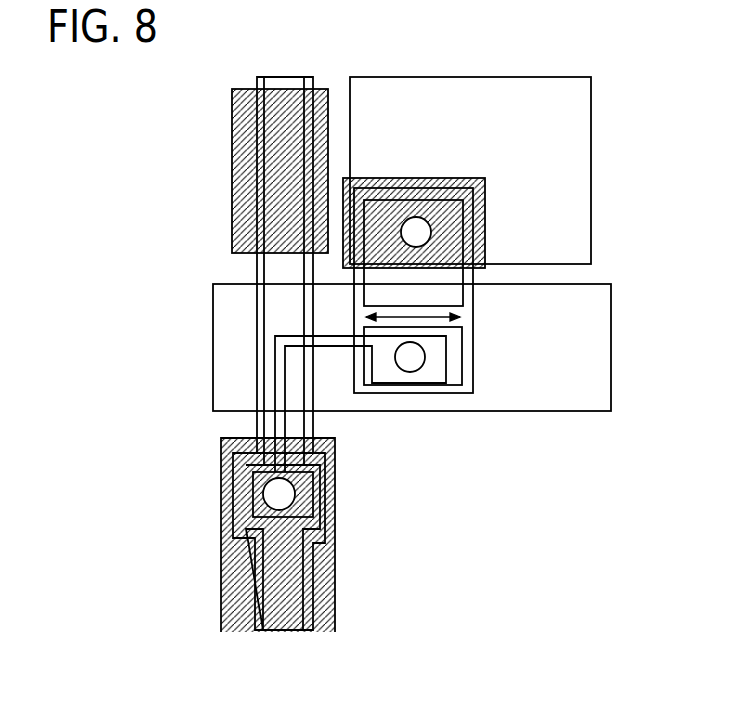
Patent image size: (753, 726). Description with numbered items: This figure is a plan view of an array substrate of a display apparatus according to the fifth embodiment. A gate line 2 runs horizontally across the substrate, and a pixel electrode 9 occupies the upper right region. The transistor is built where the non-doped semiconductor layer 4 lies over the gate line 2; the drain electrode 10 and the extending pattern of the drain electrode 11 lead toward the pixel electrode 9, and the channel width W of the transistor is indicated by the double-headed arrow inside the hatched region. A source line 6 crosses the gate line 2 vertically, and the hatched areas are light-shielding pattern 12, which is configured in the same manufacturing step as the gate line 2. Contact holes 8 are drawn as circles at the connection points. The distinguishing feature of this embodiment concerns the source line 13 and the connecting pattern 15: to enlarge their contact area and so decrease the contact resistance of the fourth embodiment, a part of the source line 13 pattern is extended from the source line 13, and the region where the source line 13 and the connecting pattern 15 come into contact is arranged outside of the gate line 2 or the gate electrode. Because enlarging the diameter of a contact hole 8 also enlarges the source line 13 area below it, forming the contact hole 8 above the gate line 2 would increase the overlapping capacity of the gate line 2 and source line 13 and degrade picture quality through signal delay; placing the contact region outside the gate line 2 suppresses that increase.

The gate line 2 is at (512, 382).
The non-doped semiconductor layer 4 is at (468, 320).
The source line 6 is at (462, 342).
The contact hole 8 is at (418, 223).
The pixel electrode 9 is at (552, 155).
The drain electrode 10 is at (450, 302).
The extending pattern of the drain electrode 11 is at (450, 212).
The light-shielding pattern 12 is at (325, 90).
The source line 13 is at (278, 82).
The connecting pattern 15 is at (325, 343).
The channel width W is at (427, 317).